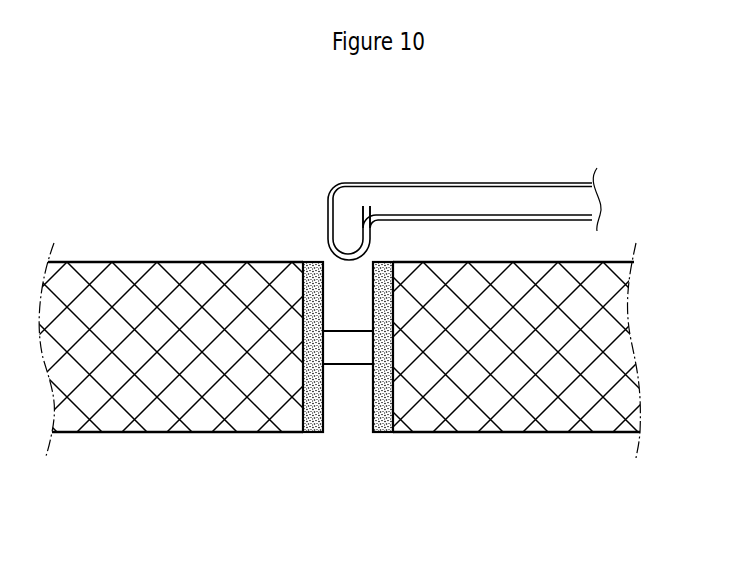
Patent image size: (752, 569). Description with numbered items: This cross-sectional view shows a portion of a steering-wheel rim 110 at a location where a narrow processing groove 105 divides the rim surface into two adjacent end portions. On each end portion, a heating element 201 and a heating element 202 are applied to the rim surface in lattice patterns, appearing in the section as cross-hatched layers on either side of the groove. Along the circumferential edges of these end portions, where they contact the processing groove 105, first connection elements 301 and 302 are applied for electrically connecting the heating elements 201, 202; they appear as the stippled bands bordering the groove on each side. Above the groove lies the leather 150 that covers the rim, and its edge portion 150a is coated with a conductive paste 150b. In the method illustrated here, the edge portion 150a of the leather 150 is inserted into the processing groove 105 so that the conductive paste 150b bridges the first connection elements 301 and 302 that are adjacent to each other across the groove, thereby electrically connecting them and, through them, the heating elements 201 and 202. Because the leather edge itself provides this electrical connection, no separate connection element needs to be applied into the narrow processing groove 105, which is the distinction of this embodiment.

The rim 110 is at (370, 367).
The heating element 201 is at (134, 270).
The heating element 202 is at (608, 285).
The first connection element 301 is at (312, 435).
The first connection element 302 is at (387, 435).
The processing groove 105 is at (347, 406).
The leather 150 is at (412, 174).
The edge portion of the leather 150a is at (355, 237).
The conductive paste 150b is at (327, 222).